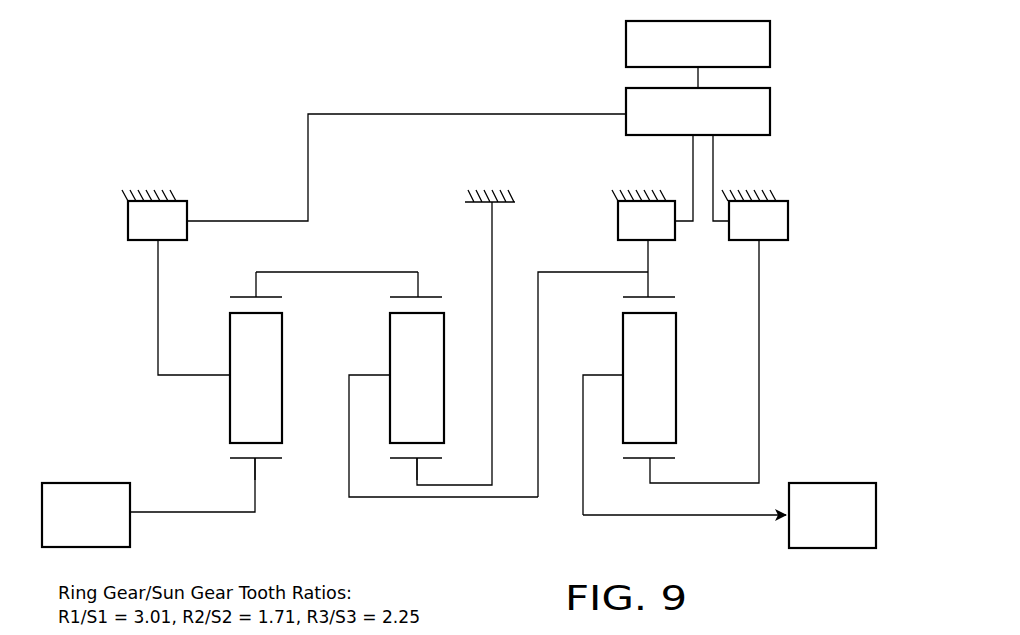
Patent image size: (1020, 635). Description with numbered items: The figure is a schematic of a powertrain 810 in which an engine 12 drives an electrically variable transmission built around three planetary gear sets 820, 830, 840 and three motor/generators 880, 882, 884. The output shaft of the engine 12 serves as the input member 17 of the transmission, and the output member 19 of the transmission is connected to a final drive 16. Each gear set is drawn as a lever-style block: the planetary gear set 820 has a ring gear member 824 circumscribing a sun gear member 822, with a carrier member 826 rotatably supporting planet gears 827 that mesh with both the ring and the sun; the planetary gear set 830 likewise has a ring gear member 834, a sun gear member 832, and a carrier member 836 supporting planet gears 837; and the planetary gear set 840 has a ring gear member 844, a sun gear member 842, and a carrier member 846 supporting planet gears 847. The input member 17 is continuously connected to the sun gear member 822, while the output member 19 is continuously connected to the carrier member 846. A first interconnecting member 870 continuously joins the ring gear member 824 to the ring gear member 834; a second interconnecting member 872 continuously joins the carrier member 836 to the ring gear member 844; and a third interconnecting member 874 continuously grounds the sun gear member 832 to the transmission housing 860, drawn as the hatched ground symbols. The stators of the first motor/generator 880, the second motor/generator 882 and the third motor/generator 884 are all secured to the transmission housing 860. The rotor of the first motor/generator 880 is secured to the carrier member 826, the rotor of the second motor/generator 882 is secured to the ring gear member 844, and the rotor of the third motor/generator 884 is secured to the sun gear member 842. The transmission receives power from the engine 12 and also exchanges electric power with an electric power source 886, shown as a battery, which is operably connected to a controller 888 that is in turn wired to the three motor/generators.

The powertrain 810 is at (216, 82).
The engine 12 is at (99, 468).
The final drive 16 is at (807, 458).
The input member 17 is at (152, 512).
The output member 19 is at (765, 518).
The planetary gear set 820 is at (269, 464).
The sun gear member 822 is at (240, 462).
The ring gear member 824 is at (240, 295).
The carrier member 826 is at (214, 386).
The planet gears 827 is at (256, 378).
The planetary gear set 830 is at (426, 464).
The sun gear member 832 is at (392, 460).
The ring gear member 834 is at (430, 295).
The carrier member 836 is at (376, 371).
The planet gears 837 is at (417, 378).
The planetary gear set 840 is at (659, 464).
The sun gear member 842 is at (633, 460).
The ring gear member 844 is at (662, 297).
The carrier member 846 is at (609, 371).
The planet gears 847 is at (649, 378).
The transmission housing 860 is at (162, 190).
The first interconnecting member 870 is at (360, 270).
The second interconnecting member 872 is at (533, 498).
The third interconnecting member 874 is at (481, 487).
The first motor/generator 880 is at (116, 204).
The second motor/generator 882 is at (606, 206).
The third motor/generator 884 is at (799, 206).
The electric power source 886 is at (772, 45).
The controller 888 is at (772, 110).